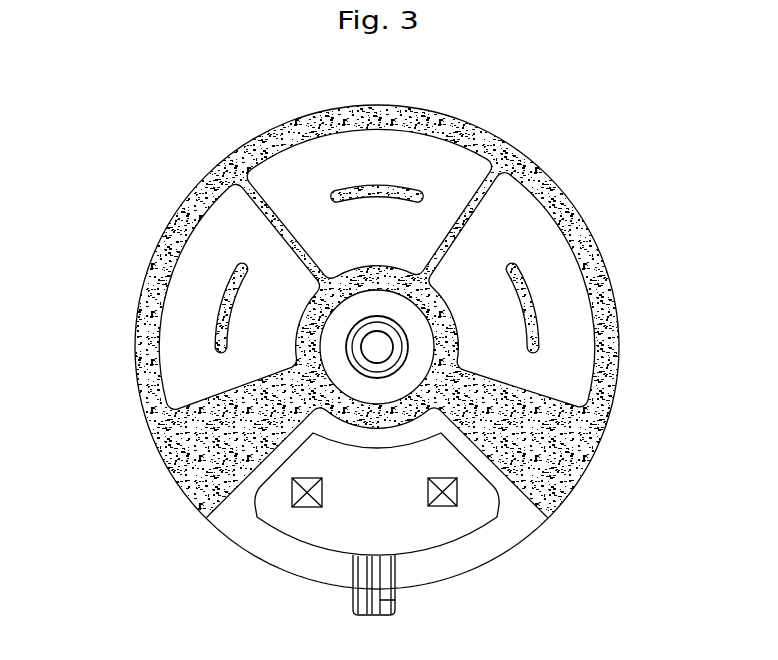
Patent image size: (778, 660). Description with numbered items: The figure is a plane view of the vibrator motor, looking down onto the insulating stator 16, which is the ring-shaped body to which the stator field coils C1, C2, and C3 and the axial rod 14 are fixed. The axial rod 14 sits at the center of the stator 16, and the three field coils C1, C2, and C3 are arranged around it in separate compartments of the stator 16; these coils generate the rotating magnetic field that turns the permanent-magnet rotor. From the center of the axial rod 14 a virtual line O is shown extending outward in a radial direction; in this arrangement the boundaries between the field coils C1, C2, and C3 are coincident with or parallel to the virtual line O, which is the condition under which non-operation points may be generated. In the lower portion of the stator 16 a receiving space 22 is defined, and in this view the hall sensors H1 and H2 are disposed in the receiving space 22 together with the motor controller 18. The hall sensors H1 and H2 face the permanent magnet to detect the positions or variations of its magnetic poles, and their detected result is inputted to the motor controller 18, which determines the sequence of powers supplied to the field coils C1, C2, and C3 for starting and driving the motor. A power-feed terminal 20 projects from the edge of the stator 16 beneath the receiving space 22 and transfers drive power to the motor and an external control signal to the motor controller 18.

The axial rod 14 is at (367, 340).
The insulating stator 16 is at (583, 420).
The motor controller 18 is at (427, 522).
The power-feed terminal 20 is at (395, 600).
The receiving space 22 is at (313, 560).
The stator field coil C1 is at (188, 372).
The stator field coil C2 is at (445, 157).
The stator field coil C3 is at (563, 270).
The hall sensor H1 is at (292, 498).
The hall sensor H2 is at (447, 500).
The virtual line O is at (377, 347).